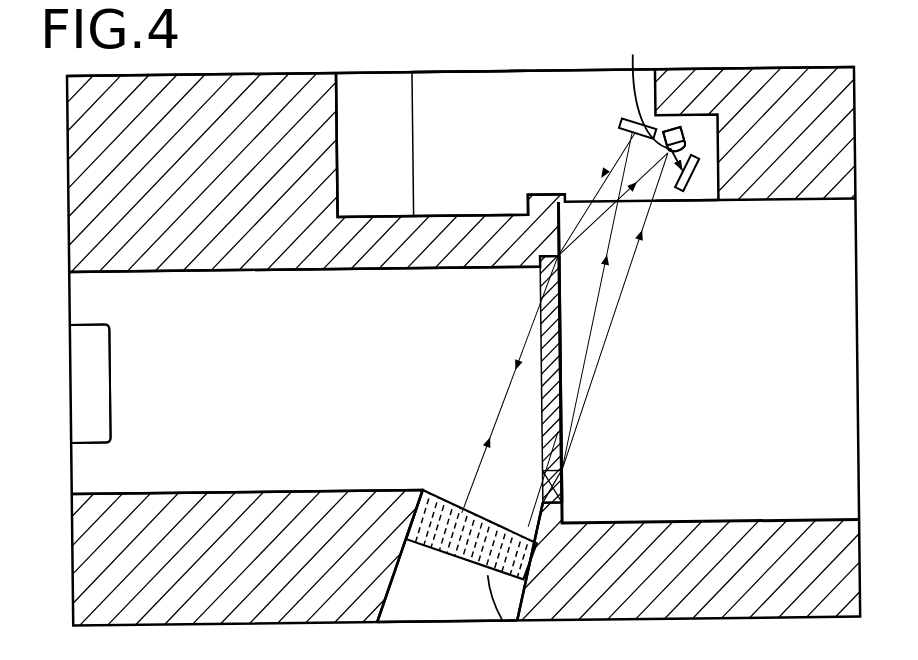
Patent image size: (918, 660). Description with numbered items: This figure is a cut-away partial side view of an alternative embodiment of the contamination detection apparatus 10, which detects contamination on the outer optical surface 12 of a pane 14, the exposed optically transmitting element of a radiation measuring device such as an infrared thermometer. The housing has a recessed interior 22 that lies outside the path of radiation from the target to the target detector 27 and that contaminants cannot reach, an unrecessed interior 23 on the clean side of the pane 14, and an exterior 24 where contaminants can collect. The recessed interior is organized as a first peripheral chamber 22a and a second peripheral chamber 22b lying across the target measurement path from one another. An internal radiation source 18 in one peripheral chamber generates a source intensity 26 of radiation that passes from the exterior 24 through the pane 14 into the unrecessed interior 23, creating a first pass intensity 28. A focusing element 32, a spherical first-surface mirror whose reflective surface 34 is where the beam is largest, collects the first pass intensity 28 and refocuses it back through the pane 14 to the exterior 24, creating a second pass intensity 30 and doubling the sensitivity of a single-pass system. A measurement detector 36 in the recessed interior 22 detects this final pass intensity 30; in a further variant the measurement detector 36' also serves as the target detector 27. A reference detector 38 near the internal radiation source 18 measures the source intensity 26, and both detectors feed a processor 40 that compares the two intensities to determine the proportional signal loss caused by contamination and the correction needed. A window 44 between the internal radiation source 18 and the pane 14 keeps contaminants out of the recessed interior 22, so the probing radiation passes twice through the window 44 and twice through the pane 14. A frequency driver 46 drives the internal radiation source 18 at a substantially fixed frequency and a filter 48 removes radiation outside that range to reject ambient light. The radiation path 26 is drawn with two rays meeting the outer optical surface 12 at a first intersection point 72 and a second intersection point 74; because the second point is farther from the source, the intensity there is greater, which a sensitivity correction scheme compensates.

The contamination detection apparatus 10 is at (551, 55).
The outer optical surface 12 is at (554, 383).
The pane 14 is at (557, 446).
The internal radiation source 18 is at (674, 132).
The frequency driver 46 is at (674, 140).
The recessed interior 22 is at (473, 117).
The first peripheral chamber 22a is at (448, 99).
The second peripheral chamber 22b is at (463, 612).
The unrecessed interior 23 is at (111, 477).
The exterior 24 is at (793, 254).
The source intensity of radiation 26 is at (641, 237).
The target detector 27 is at (78, 353).
The first pass intensity of radiation 28 is at (526, 517).
The second pass intensity of radiation 30 is at (600, 184).
The focusing element 32 is at (507, 615).
The reflective surface 34 is at (441, 504).
The measurement detector 36 is at (649, 99).
The measurement detector 36' is at (68, 384).
The reference detector 38 is at (703, 205).
The processor 40 is at (360, 121).
The window 44 is at (682, 207).
The filter 48 is at (637, 150).
The first intersection point 72 is at (558, 262).
The second intersection point 74 is at (559, 479).